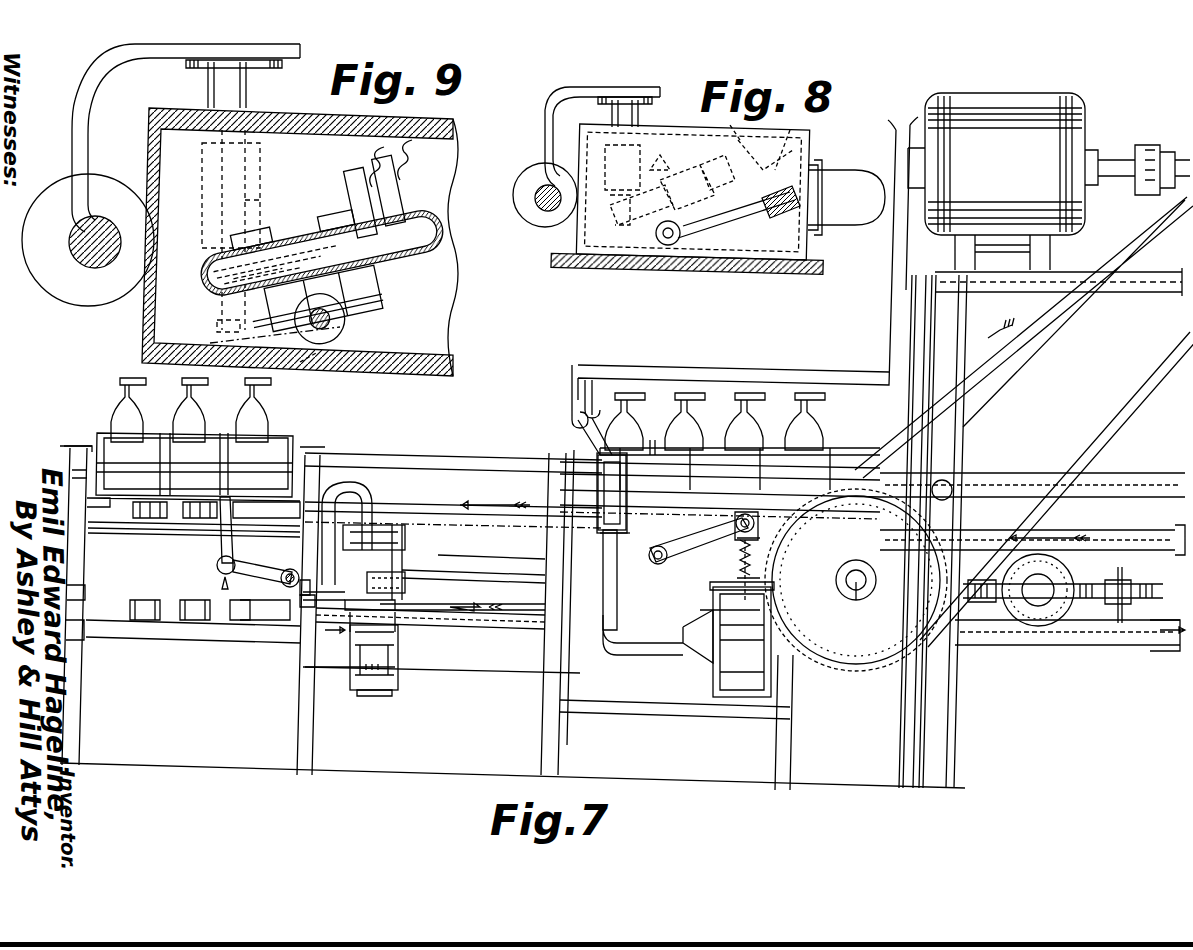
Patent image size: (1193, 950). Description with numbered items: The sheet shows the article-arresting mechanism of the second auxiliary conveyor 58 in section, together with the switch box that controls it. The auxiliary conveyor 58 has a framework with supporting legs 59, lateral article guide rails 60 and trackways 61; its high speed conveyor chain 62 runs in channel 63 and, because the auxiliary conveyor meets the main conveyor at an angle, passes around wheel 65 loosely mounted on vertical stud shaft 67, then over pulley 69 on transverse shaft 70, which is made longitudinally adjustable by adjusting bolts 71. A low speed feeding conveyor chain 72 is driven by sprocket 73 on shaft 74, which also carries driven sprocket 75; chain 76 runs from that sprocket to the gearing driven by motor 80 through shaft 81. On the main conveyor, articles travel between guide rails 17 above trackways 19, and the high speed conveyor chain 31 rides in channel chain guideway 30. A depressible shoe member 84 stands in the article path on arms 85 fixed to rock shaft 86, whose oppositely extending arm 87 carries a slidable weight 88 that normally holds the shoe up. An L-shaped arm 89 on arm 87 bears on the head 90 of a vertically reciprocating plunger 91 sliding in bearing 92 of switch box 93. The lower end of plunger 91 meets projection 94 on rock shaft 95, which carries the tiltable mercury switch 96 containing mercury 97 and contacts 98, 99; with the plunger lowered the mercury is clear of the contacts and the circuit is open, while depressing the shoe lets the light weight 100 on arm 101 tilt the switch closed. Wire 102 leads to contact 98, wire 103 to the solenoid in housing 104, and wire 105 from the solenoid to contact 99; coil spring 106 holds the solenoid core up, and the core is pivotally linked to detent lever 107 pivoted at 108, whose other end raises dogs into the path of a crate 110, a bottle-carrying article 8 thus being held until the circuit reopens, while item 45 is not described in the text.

In FIG. 7, the bottle 8 is at (335, 640).
In FIG. 7, the article guide rails 17 is at (78, 442).
In FIG. 7, the trackways 19 is at (80, 500).
In FIG. 7, the channel chain guideway 30 is at (136, 519).
In FIG. 7, the high speed conveyor chain 31 is at (168, 522).
In FIG. 7, the lower bottle support 45 is at (185, 522).
In FIG. 7, the second auxiliary conveyor 58 is at (528, 445).
In FIG. 7, the supporting legs 59 is at (302, 732).
In FIG. 7, the lateral article guide rails 60 is at (462, 456).
In FIG. 7, the trackways 61 is at (475, 495).
In FIG. 7, the high speed conveyor chain 62 is at (998, 647).
In FIG. 7, the channel 63 is at (456, 545).
In FIG. 7, the wheel 65 is at (398, 548).
In FIG. 7, the vertical stud shaft 67 is at (386, 704).
In FIG. 7, the pulley 69 is at (1063, 572).
In FIG. 7, the transverse shaft 70 is at (1048, 600).
In FIG. 7, the adjusting bolts 71 is at (1146, 591).
In FIG. 7, the low speed feeding conveyor chain 72 is at (1142, 544).
In FIG. 7, the sprocket 73 is at (856, 580).
In FIG. 7, the shaft 74 is at (856, 600).
In FIG. 7, the driven sprocket 75 is at (943, 504).
In FIG. 7, the chain 76 is at (893, 443).
In FIG. 7, the motor 80 is at (1003, 181).
In FIG. 7, the shaft 81 is at (1120, 160).
In FIG. 7, the depressible shoe member 84 is at (230, 490).
In FIG. 7, the arms 85 is at (220, 550).
In FIG. 7, the rock shaft 86 is at (284, 562).
In FIG. 9, the oppositely extending arm 87 is at (83, 264).
In FIG. 8, the oppositely extending arm 87 is at (546, 211).
In FIG. 7, the oppositely extending arm 87 is at (415, 585).
In FIG. 9, the weight 88 is at (35, 259).
In FIG. 8, the weight 88 is at (515, 182).
In FIG. 7, the weight 88 is at (395, 590).
In FIG. 9, the L-shaped arm 89 is at (90, 84).
In FIG. 8, the L-shaped arm 89 is at (540, 108).
In FIG. 7, the L-shaped arm 89 is at (366, 490).
In FIG. 9, the head 90 is at (212, 84).
In FIG. 8, the head 90 is at (646, 100).
In FIG. 7, the head 90 is at (398, 551).
In FIG. 9, the plunger 91 is at (264, 217).
In FIG. 8, the plunger 91 is at (674, 154).
In FIG. 9, the bearing 92 is at (200, 167).
In FIG. 8, the bearing 92 is at (583, 152).
In FIG. 7, the bearing 92 is at (300, 625).
In FIG. 9, the switch box 93 is at (390, 373).
In FIG. 8, the switch box 93 is at (800, 150).
In FIG. 7, the switch box 93 is at (310, 640).
In FIG. 9, the projection 94 is at (308, 368).
In FIG. 7, the projection 94 is at (360, 600).
In FIG. 9, the rock shaft 95 is at (345, 320).
In FIG. 8, the rock shaft 95 is at (670, 244).
In FIG. 9, the tiltable mercury switch 96 is at (300, 232).
In FIG. 8, the tiltable mercury switch 96 is at (672, 190).
In FIG. 9, the mercury 97 is at (278, 263).
In FIG. 9, the electrical contact 98 is at (343, 214).
In FIG. 9, the electrical contact 99 is at (392, 205).
In FIG. 8, the weight 100 is at (775, 217).
In FIG. 7, the weight 100 is at (290, 605).
In FIG. 8, the arm 101 is at (693, 229).
In FIG. 7, the arm 101 is at (625, 533).
In FIG. 9, the wire 102 is at (378, 158).
In FIG. 8, the wire 102 is at (749, 139).
In FIG. 7, the wire 102 is at (902, 104).
In FIG. 7, the wire 103 is at (908, 231).
In FIG. 7, the solenoid housing 104 is at (738, 702).
In FIG. 9, the wire 105 is at (427, 164).
In FIG. 8, the wire 105 is at (786, 139).
In FIG. 7, the wire 105 is at (660, 653).
In FIG. 7, the coil spring 106 is at (732, 550).
In FIG. 7, the detent lever 107 is at (678, 550).
In FIG. 7, the pivot 108 is at (658, 565).
In FIG. 7, the milk bottle crate 110 is at (845, 450).